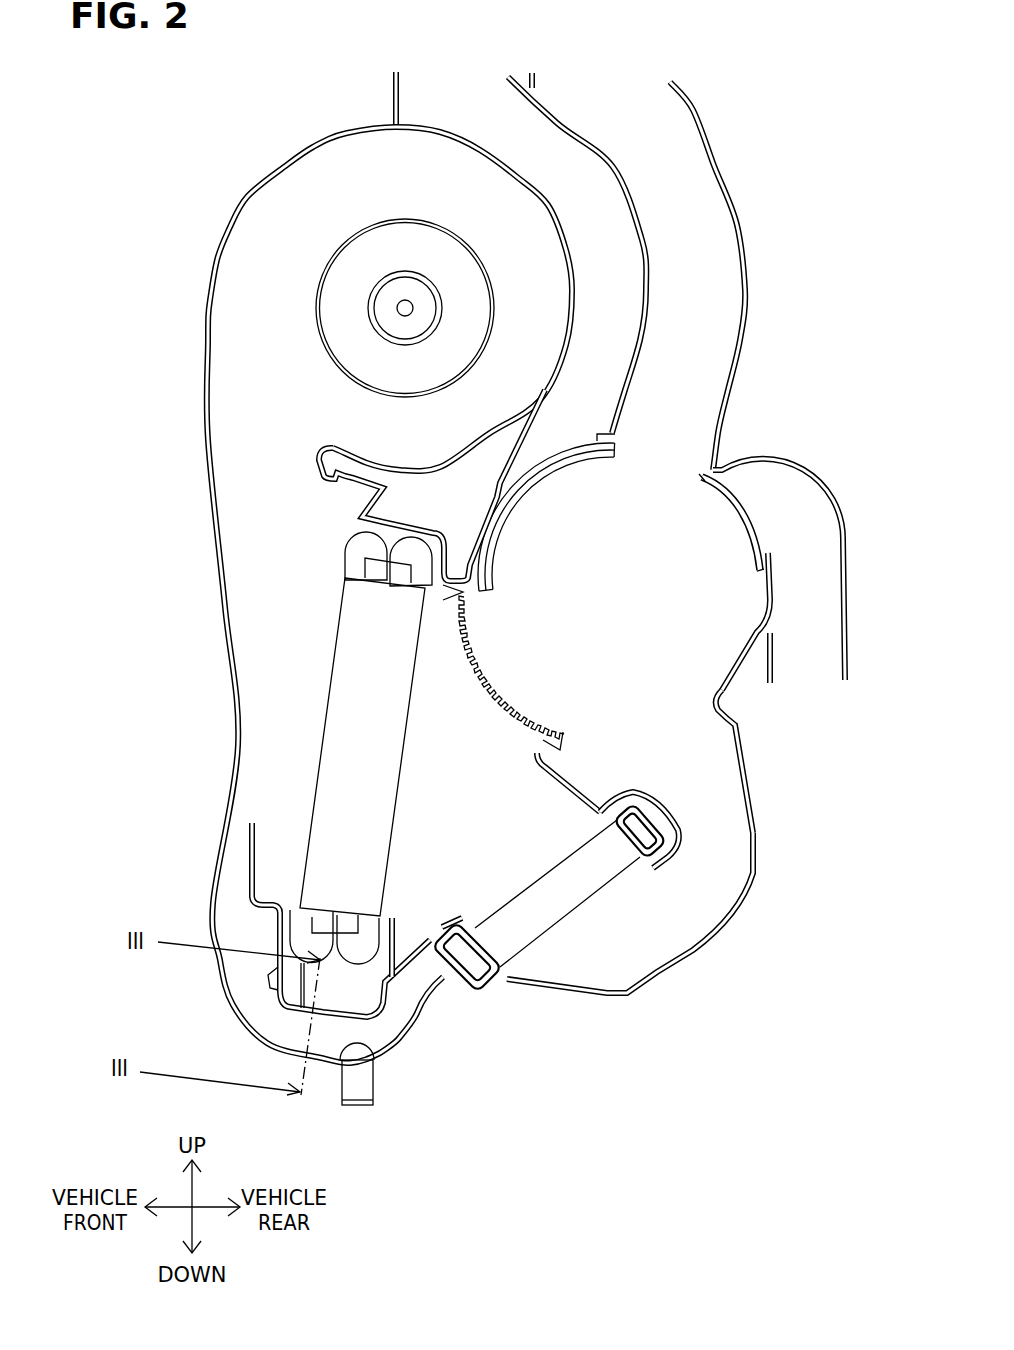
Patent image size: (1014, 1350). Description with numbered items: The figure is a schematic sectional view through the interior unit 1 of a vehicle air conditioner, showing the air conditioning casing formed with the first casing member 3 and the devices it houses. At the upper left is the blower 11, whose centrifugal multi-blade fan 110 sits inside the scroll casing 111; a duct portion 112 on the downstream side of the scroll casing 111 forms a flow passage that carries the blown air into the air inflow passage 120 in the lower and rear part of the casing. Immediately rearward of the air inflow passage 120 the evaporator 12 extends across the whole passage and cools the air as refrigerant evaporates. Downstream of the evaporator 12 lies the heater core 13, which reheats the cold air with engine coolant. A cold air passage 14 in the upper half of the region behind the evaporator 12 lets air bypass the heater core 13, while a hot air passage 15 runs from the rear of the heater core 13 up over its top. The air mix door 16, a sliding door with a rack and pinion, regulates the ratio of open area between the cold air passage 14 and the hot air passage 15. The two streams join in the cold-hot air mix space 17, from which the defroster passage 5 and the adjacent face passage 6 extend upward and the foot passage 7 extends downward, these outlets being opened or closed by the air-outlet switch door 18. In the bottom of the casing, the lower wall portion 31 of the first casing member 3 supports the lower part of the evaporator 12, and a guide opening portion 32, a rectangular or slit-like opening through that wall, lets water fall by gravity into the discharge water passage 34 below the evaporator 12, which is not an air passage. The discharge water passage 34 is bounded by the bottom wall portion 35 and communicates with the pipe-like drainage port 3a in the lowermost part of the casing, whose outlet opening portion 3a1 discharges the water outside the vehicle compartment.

The interior unit 1 is at (727, 92).
The first casing member 3 is at (755, 878).
The drainage port 3a is at (353, 1040).
The outlet opening portion 3a1 is at (360, 1107).
The defroster passage 5 is at (600, 213).
The face passage 6 is at (710, 237).
The foot passage 7 is at (813, 552).
The blower 11 is at (356, 228).
The evaporator 12 is at (340, 657).
The heater core 13 is at (590, 900).
The cold air passage 14 is at (503, 628).
The hot air passage 15 is at (730, 715).
The air mix door 16 is at (497, 680).
The cold-hot air mix space 17 is at (618, 587).
The air-outlet switch door 18 is at (747, 490).
The lower wall portion 31 is at (395, 1018).
The guide opening portion 32 is at (277, 913).
The discharge water passage 34 is at (380, 1055).
The bottom wall portion 35 is at (375, 1078).
The centrifugal multi-blade fan 110 is at (320, 278).
The scroll casing 111 is at (280, 168).
The duct portion 112 is at (207, 413).
The air inflow passage 120 is at (327, 622).